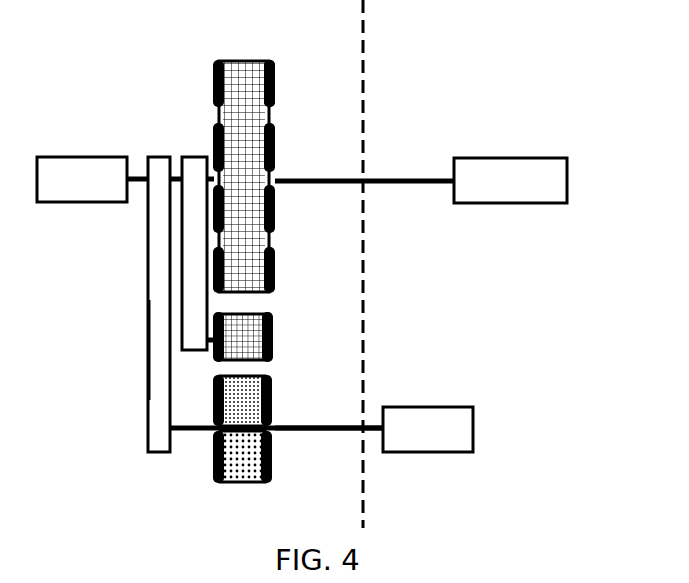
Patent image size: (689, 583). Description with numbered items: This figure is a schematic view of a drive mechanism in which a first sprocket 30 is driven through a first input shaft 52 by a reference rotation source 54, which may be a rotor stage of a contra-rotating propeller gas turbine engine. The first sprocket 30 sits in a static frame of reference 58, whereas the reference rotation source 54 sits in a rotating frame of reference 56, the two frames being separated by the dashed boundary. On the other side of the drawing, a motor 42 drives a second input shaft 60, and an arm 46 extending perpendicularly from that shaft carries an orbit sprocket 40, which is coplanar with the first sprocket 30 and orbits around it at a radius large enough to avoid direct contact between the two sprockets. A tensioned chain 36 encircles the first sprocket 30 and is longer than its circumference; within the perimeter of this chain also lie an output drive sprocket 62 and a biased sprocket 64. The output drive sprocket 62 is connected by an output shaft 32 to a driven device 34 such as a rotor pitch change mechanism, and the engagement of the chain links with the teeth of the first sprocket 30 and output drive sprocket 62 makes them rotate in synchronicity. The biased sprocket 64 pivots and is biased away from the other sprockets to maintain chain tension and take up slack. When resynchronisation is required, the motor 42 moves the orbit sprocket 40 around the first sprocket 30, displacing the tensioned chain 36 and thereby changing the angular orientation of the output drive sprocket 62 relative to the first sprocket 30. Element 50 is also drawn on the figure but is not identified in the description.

The first sprocket 30 is at (221, 108).
The output shaft 32 is at (338, 425).
The driven device 34 is at (437, 432).
The tensioned chain 36 is at (274, 80).
The orbit sprocket 40 is at (250, 341).
The motor 42 is at (97, 168).
The arm 46 is at (194, 237).
The frame bar 50 is at (160, 357).
The first input shaft 52 is at (393, 176).
The reference rotation source 54 is at (528, 180).
The rotating frame of reference 56 is at (477, 276).
The static frame of reference 58 is at (337, 276).
The second input shaft 60 is at (137, 172).
The output drive sprocket 62 is at (243, 484).
The biased sprocket 64 is at (237, 410).